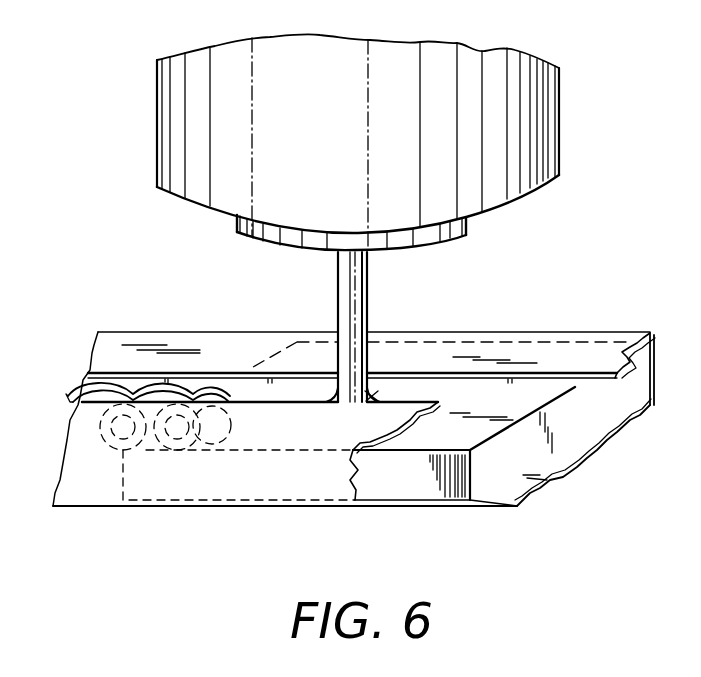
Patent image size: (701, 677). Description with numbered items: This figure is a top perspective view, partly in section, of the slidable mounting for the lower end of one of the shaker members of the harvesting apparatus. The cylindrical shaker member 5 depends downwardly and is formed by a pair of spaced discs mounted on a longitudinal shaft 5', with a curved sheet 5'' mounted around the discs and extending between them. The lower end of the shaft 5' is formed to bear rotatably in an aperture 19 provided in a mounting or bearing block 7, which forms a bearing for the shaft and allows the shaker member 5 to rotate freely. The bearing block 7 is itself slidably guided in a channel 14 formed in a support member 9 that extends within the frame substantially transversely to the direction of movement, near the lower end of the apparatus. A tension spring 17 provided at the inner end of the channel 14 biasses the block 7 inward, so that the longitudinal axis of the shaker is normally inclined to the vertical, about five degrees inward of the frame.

The cylindrical shaker member 5 is at (383, 142).
The curved sheet 5'' is at (145, 125).
The longitudinal shaft 5' is at (319, 327).
The mounting or bearing block 7 is at (402, 493).
The support member 9 is at (592, 352).
The channel 14 is at (443, 395).
The tension spring 17 is at (73, 393).
The aperture 19 is at (375, 398).